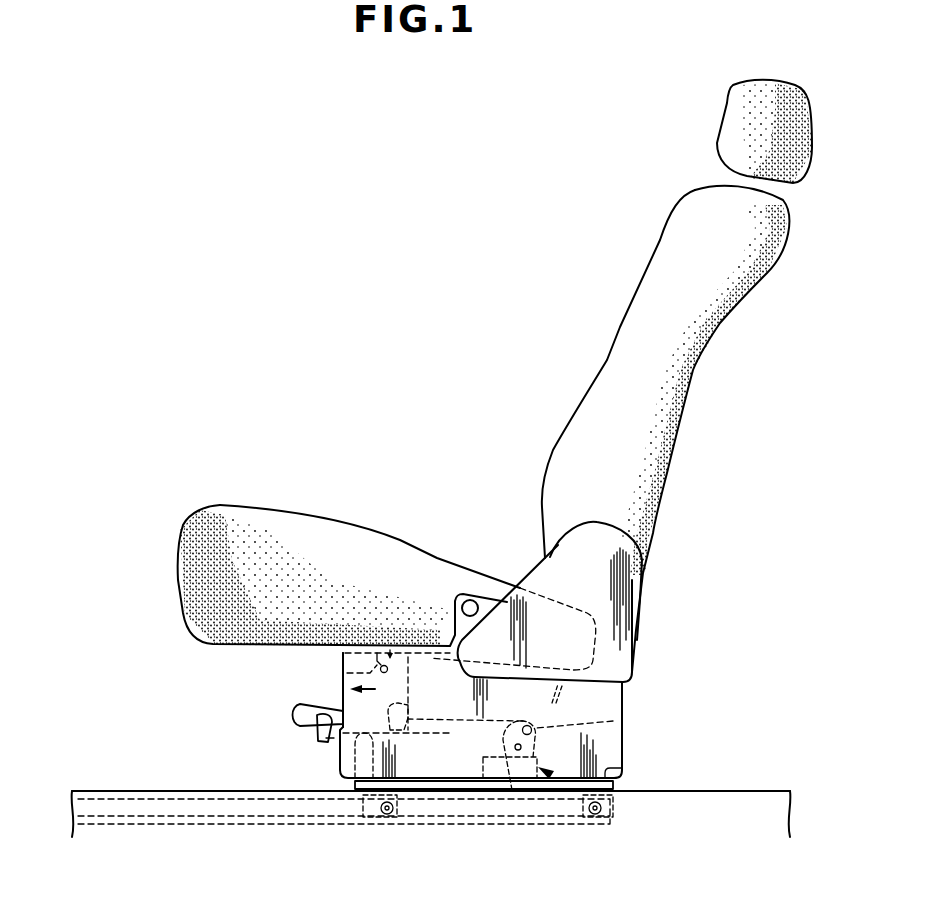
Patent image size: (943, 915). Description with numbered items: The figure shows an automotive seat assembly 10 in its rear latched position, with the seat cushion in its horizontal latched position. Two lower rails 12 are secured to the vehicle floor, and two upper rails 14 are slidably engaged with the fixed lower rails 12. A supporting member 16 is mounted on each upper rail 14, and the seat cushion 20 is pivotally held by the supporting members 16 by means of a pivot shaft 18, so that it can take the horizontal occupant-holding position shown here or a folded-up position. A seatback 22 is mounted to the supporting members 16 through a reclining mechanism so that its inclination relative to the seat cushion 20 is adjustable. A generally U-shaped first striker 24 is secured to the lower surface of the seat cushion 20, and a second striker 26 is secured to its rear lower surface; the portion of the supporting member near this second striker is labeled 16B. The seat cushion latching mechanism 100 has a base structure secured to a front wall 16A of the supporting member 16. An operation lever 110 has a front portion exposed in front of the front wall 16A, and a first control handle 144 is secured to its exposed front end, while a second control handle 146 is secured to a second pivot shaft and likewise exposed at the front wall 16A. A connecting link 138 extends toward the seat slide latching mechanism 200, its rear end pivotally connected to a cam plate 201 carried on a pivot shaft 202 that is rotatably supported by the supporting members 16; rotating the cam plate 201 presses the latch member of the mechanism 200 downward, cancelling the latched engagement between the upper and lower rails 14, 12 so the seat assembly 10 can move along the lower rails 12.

The seat assembly 10 is at (434, 424).
The lower rail 12 is at (118, 807).
The upper rail 14 is at (622, 770).
The supporting member 16 is at (612, 746).
The front wall 16A is at (343, 679).
The rear bracket portion of seat frame 16B is at (625, 687).
The pivot shaft 18 is at (470, 598).
The seat cushion 20 is at (230, 513).
The seatback 22 is at (700, 363).
The first striker 24 is at (386, 652).
The second striker 26 is at (560, 690).
The seat cushion latching mechanism 100 is at (345, 688).
The operation lever 110 is at (330, 740).
The connecting link 138 is at (450, 735).
The first control handle 144 is at (313, 735).
The second control handle 146 is at (293, 714).
The seat slide latching mechanism 200 is at (554, 776).
The cam plate 201 is at (622, 722).
The pivot shaft 202 is at (512, 795).